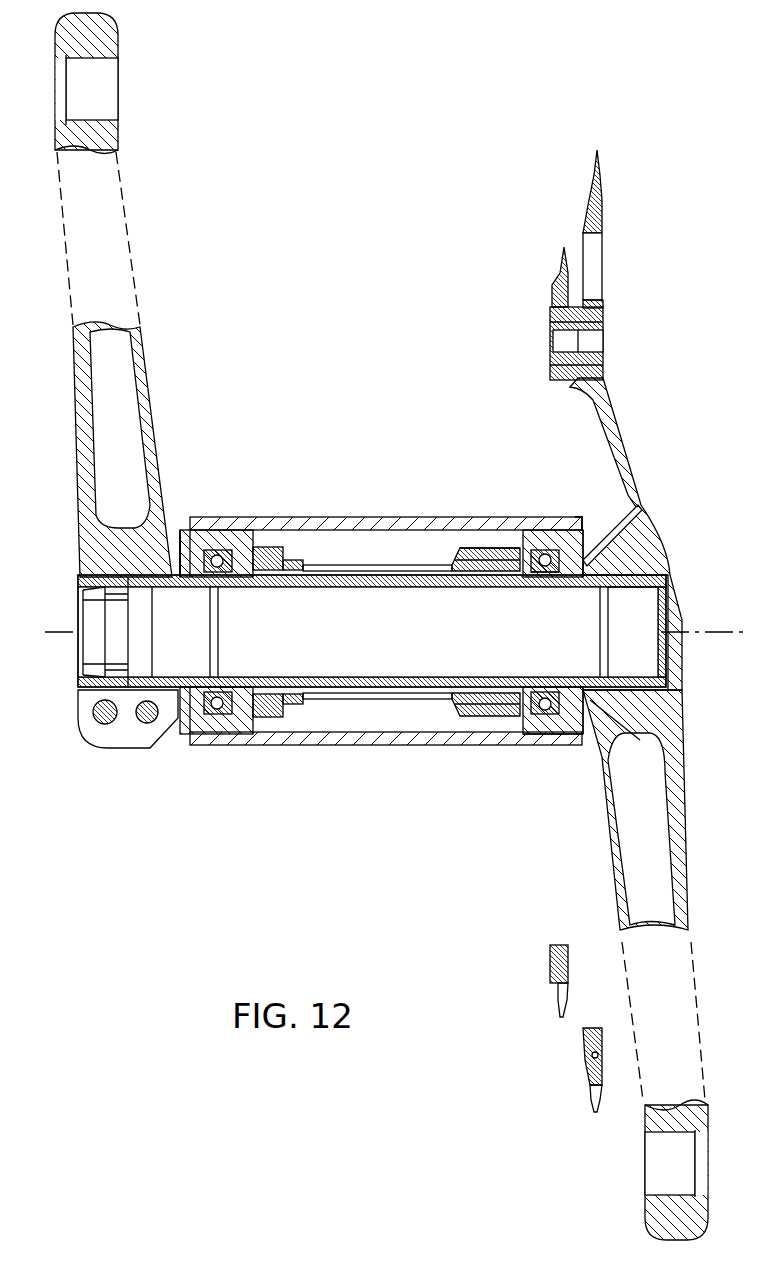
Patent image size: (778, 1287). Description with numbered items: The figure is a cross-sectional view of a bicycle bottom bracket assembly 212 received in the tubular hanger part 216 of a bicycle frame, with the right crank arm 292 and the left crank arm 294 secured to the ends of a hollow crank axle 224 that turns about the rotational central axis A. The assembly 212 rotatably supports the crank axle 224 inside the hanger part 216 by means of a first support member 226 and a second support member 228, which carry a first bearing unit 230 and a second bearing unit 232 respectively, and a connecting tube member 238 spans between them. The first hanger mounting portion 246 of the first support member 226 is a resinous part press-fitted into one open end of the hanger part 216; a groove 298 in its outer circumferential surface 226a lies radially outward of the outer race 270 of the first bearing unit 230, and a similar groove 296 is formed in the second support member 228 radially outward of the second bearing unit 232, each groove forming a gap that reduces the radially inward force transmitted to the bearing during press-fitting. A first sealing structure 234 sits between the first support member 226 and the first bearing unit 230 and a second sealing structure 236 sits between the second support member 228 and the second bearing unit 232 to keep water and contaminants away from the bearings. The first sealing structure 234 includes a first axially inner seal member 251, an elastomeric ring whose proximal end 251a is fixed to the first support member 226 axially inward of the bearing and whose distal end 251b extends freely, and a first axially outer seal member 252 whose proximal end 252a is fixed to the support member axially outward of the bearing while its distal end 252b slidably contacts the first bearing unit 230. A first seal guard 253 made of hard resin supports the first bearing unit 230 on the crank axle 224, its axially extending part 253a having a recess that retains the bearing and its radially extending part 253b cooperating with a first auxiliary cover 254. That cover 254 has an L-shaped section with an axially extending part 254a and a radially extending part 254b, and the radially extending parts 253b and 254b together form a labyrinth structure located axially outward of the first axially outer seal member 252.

The rotational central axis A is at (62, 628).
The bicycle bottom bracket assembly 212 is at (370, 549).
The tubular hanger part 216 is at (430, 512).
The crank axle 224 is at (650, 566).
The first support member 226 is at (578, 518).
The outer circumferential surface 226a is at (517, 540).
The second support member 228 is at (180, 514).
The first bearing unit 230 is at (546, 728).
The second bearing unit 232 is at (220, 718).
The first sealing structure 234 is at (592, 712).
The second sealing structure 236 is at (173, 711).
The connecting tube member 238 is at (333, 548).
The first hanger mounting portion 246 is at (573, 508).
The first axially inner seal member 251 is at (505, 715).
The proximal end 251a is at (505, 545).
The distal end 251b is at (532, 578).
The first axially outer seal member 252 is at (538, 530).
The proximal end 252a is at (568, 748).
The distal end 252b is at (548, 688).
The first seal guard 253 is at (578, 690).
The axially extending part 253a is at (561, 580).
The radially extending part 253b is at (632, 582).
The first auxiliary cover 254 is at (583, 566).
The axially extending part 254a is at (605, 745).
The radially extending part 254b is at (585, 702).
The outer race 270 is at (526, 544).
The right crank arm 292 is at (620, 414).
The left crank arm 294 is at (150, 382).
The groove 296 is at (220, 544).
The groove 298 is at (543, 720).